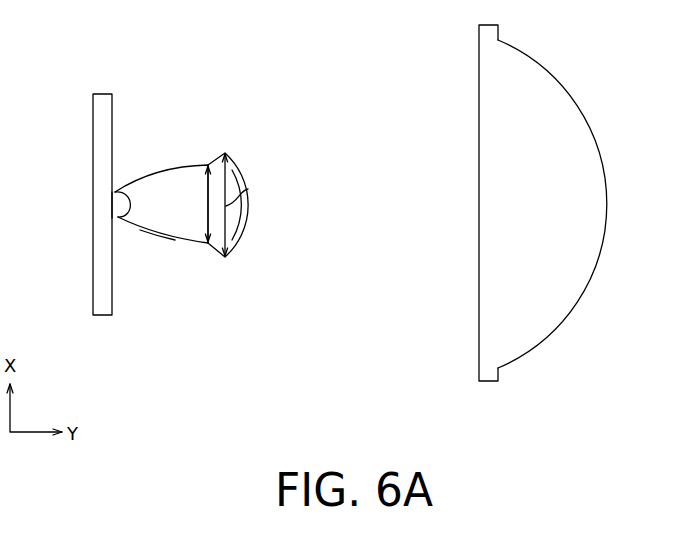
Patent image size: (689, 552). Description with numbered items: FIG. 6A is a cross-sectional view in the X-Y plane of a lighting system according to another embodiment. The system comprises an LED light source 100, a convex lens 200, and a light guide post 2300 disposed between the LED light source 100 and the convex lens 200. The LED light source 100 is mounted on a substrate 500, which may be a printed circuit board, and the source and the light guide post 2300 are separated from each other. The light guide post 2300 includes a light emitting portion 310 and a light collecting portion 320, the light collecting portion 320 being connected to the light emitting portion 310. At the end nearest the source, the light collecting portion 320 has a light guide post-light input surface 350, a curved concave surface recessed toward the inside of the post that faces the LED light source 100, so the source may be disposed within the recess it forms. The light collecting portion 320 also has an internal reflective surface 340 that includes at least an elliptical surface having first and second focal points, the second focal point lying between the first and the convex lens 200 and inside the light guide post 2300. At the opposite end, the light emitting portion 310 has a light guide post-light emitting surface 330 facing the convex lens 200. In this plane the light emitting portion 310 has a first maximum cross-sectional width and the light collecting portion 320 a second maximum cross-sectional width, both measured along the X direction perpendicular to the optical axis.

The LED light source 100 is at (117, 209).
The convex lens 200 is at (580, 107).
The substrate 500 is at (105, 94).
The light guide post 2300 is at (175, 199).
The light emitting portion 310 is at (233, 256).
The light collecting portion 320 is at (177, 243).
The light guide post-light emitting surface 330 is at (247, 225).
The internal reflective surface 340 is at (158, 224).
The light guide post-light input surface 350 is at (120, 198).